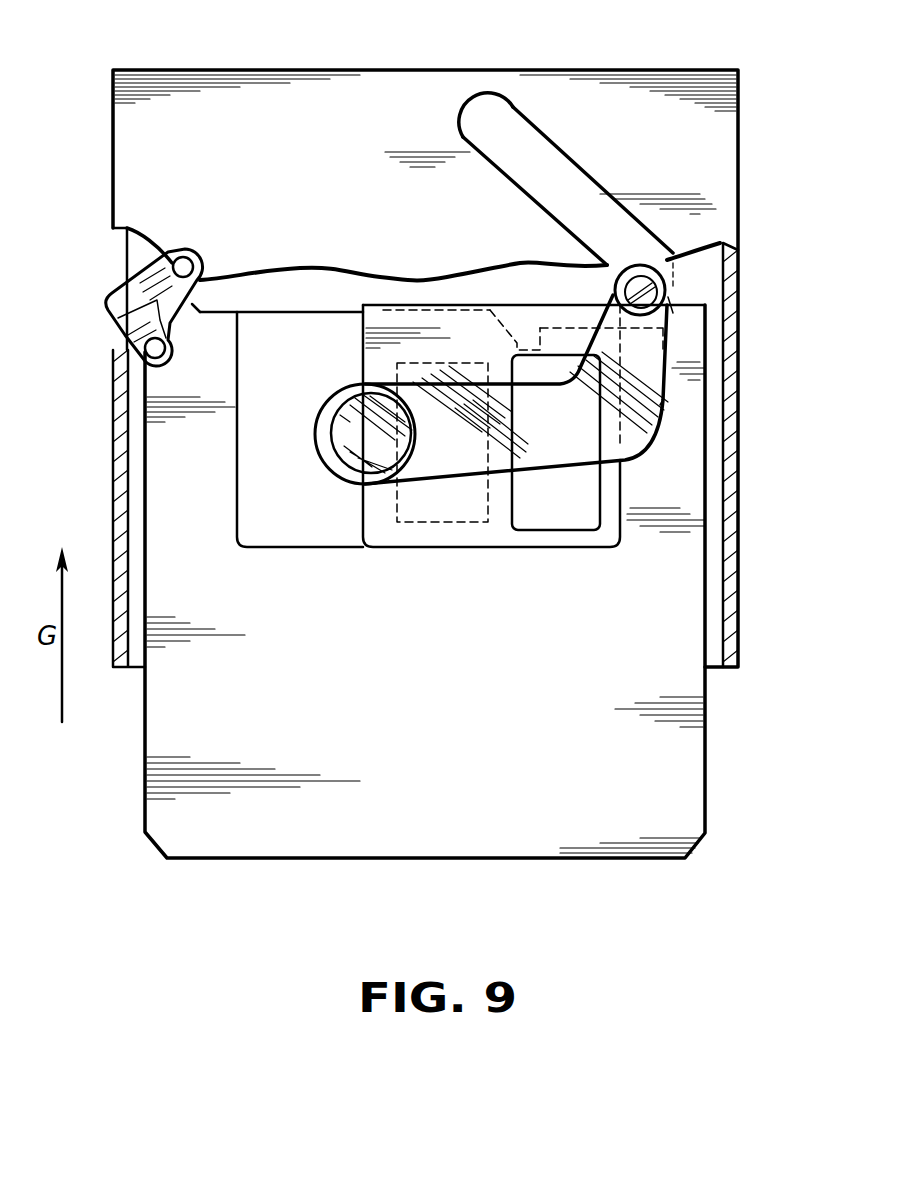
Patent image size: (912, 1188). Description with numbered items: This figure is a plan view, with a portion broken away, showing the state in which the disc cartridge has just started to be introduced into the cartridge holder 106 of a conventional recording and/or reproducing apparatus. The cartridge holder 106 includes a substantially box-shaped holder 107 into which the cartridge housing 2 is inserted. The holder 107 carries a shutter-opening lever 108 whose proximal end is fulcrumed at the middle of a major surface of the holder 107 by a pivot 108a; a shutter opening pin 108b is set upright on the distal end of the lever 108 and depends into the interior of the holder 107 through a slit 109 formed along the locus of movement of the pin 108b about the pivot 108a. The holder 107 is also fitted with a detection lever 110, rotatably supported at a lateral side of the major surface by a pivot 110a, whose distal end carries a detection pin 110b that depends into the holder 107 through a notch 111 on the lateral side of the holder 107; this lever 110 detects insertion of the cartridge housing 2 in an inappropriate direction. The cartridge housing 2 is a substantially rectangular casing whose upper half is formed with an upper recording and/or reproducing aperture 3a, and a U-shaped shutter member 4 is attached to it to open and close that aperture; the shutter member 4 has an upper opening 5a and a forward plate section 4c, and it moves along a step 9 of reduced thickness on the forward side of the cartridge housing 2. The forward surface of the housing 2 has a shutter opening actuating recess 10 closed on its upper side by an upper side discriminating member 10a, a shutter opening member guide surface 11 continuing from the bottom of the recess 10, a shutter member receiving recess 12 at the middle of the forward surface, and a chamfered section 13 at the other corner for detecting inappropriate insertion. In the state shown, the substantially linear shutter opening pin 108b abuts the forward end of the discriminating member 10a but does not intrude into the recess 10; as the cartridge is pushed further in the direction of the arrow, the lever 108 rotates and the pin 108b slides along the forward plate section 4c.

The cartridge housing 2 is at (677, 813).
The upper recording and/or reproducing aperture 3a is at (413, 487).
The shutter member 4 is at (493, 533).
The forward plate section 4c is at (397, 305).
The upper opening 5a is at (513, 487).
The step 9 is at (239, 470).
The shutter opening actuating recess 10 is at (668, 297).
The upper side discriminating member 10a is at (657, 400).
The shutter opening member guide surface 11 is at (568, 327).
The shutter member receiving recess 12 is at (517, 347).
The chamfered section 13 is at (188, 320).
The cartridge holder 106 is at (748, 142).
The holder 107 is at (713, 208).
The shutter-opening lever 108 is at (572, 443).
The pivot 108a is at (340, 443).
The shutter opening pin 108b is at (644, 280).
The slit 109 is at (522, 118).
The detection lever 110 is at (118, 316).
The pivot 110a is at (183, 256).
The detection pin 110b is at (146, 357).
The notch 111 is at (127, 248).